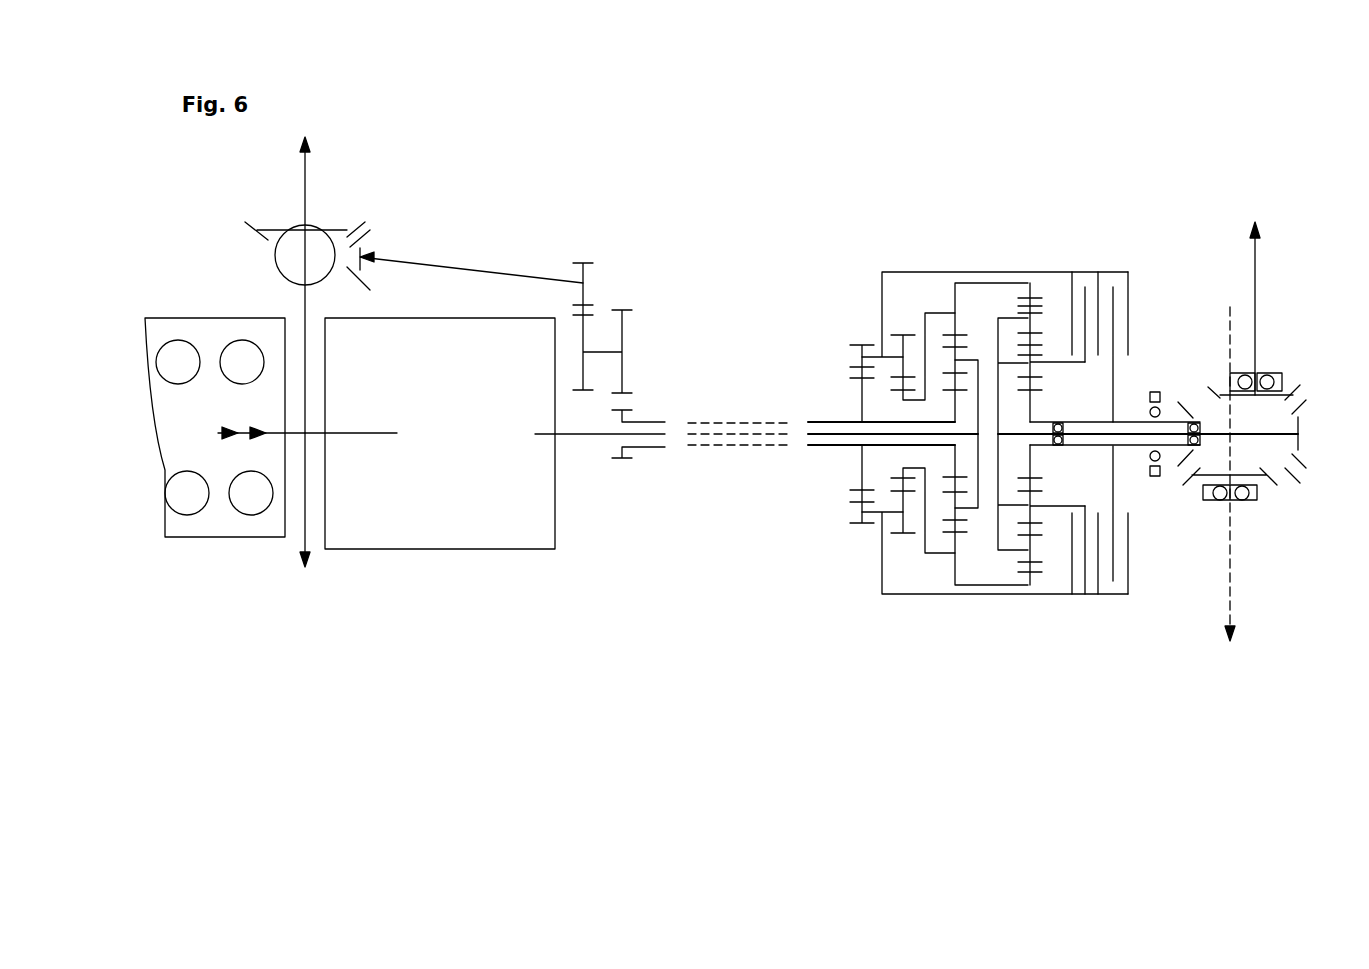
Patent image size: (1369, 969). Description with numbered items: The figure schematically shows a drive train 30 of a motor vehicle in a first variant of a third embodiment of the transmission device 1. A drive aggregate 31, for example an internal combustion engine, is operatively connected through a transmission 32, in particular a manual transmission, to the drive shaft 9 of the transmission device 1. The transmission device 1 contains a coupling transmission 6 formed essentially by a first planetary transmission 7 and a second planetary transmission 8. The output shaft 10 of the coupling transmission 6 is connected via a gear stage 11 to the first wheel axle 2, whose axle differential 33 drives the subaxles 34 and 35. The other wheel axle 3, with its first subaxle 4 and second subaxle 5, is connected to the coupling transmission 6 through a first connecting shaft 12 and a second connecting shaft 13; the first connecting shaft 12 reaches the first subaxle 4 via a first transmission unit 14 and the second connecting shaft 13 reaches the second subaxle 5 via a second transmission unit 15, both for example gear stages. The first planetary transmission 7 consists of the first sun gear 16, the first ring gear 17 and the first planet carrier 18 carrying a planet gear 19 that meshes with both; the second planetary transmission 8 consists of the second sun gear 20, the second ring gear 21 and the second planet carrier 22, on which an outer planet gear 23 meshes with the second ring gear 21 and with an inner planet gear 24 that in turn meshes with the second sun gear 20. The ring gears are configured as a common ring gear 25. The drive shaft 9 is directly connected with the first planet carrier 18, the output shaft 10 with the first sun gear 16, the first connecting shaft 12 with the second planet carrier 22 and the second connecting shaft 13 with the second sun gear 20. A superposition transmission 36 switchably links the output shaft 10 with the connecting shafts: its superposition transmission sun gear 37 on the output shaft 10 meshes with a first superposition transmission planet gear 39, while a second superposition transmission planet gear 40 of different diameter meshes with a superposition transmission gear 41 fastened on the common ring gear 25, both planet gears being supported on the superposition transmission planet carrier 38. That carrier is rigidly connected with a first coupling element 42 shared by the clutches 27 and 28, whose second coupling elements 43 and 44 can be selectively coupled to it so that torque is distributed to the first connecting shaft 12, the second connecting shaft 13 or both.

The transmission device 1 is at (1020, 183).
The first wheel axle 2 is at (360, 183).
The wheel axle 3 is at (1278, 191).
The first subaxle 4 is at (1255, 262).
The second subaxle 5 is at (1235, 575).
The coupling transmission 6 is at (1057, 213).
The first planetary transmission 7 is at (915, 652).
The second planetary transmission 8 is at (1020, 652).
The drive shaft 9 is at (577, 437).
The output shaft 10 is at (648, 450).
The gear stage 11 is at (640, 333).
The first connecting shaft 12 is at (1213, 430).
The second connecting shaft 13 is at (1130, 450).
The first transmission unit 14 is at (1305, 369).
The second transmission unit 15 is at (1213, 515).
The first sun gear 16 is at (920, 470).
The first ring gear 17 is at (965, 282).
The first planet carrier 18 is at (957, 465).
The planet gear 19 is at (955, 365).
The second sun gear 20 is at (1060, 512).
The second ring gear 21 is at (1025, 282).
The second planet carrier 22 is at (998, 530).
The outer planet gear 23 is at (1030, 313).
The inner planet gear 24 is at (1030, 355).
The common ring gear 25 is at (995, 282).
The clutch 27 is at (1082, 265).
The clutch 28 is at (1125, 265).
The drive train 30 is at (742, 173).
The drive aggregate 31 is at (195, 540).
The transmission 32 is at (400, 550).
The axle differential 33 is at (275, 270).
The subaxle 34 is at (305, 192).
The subaxle 35 is at (303, 530).
The superposition transmission 36 is at (852, 231).
The superposition transmission sun gear 37 is at (860, 470).
The superposition transmission planet carrier 38 is at (882, 514).
The first superposition transmission planet gear 39 is at (860, 510).
The second superposition transmission planet gear 40 is at (878, 522).
The superposition transmission gear 41 is at (903, 396).
The first coupling element 42 is at (1100, 560).
The second coupling element 43 is at (1087, 560).
The second coupling element 44 is at (1127, 560).